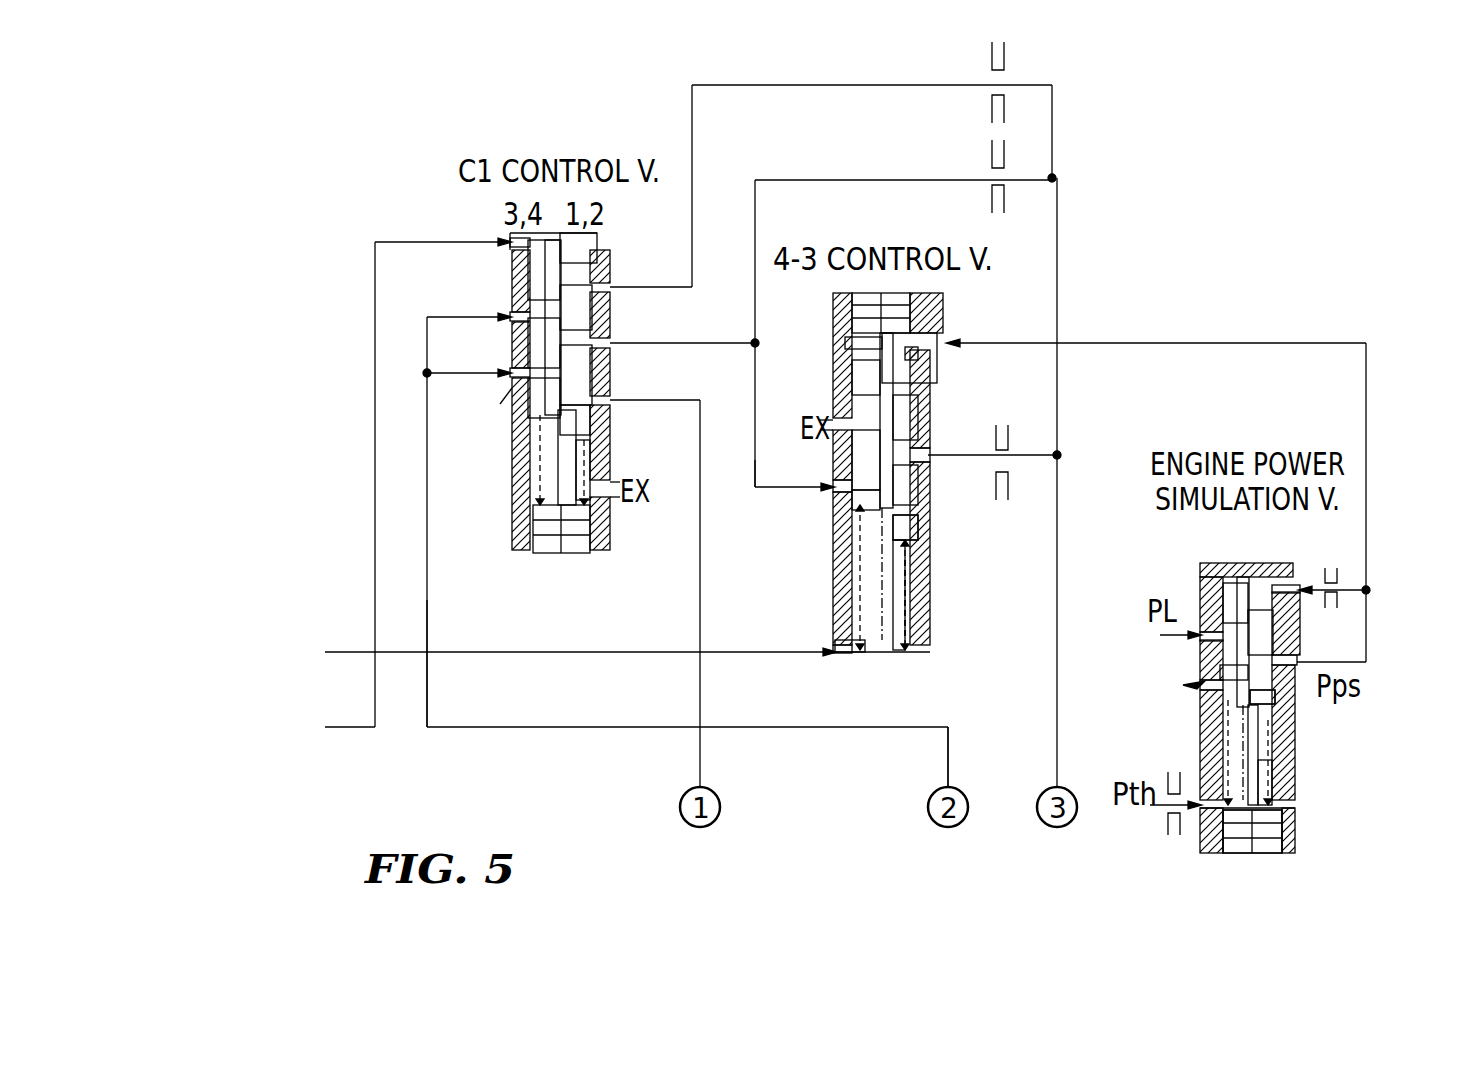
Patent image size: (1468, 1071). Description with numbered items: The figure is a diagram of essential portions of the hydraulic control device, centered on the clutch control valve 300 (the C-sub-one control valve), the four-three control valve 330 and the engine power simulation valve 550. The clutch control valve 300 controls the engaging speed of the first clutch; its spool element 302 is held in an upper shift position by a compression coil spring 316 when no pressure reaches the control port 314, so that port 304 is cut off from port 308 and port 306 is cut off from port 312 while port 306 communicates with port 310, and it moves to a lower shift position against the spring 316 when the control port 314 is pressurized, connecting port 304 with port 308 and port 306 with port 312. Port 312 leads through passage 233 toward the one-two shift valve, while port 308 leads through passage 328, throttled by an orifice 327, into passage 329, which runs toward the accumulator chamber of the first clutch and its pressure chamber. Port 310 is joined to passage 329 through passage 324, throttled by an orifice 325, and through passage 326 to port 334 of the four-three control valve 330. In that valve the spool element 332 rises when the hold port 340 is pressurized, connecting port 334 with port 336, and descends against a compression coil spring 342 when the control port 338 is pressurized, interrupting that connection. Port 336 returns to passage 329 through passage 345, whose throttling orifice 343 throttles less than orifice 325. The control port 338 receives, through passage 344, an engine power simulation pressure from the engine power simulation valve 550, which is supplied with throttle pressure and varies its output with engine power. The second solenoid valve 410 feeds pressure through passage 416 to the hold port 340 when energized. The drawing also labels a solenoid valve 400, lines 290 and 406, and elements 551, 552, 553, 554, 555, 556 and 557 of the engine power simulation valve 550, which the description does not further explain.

The passage 233 is at (701, 582).
The line 290 is at (428, 612).
The C1 control valve 300 is at (612, 542).
The spool element 302 is at (515, 349).
The port 304 is at (515, 309).
The port 306 is at (482, 406).
The port 308 is at (608, 282).
The port 310 is at (605, 338).
The port 312 is at (605, 397).
The control port 314 is at (510, 234).
The compression coil spring 316 is at (592, 456).
The passage 324 is at (902, 180).
The orifice 325 is at (1004, 158).
The passage 326 is at (757, 490).
The orifice 327 is at (1004, 56).
The passage 328 is at (826, 85).
The passage 329 is at (1058, 508).
The 4-3 control valve 330 is at (933, 603).
The spool element 332 is at (918, 512).
The port 334 is at (838, 490).
The port 336 is at (926, 447).
The control port 338 is at (940, 335).
The hold port 340 is at (846, 656).
The compression coil spring 342 is at (910, 565).
The throttling orifice 343 is at (1008, 480).
The passage 344 is at (1366, 386).
The passage 345 is at (1030, 455).
The solenoid valve 400 is at (236, 729).
The line 406 is at (372, 238).
The second solenoid valve 410 is at (467, 658).
The passage 416 is at (792, 644).
The engine power simulation valve 550 is at (1300, 768).
The spool land 551 is at (1280, 715).
The port 552 is at (1208, 649).
The spring seat 553 is at (1212, 812).
The port 554 is at (1290, 652).
The port 555 is at (1292, 577).
The spring 556 is at (1285, 790).
The port 557 is at (1198, 696).